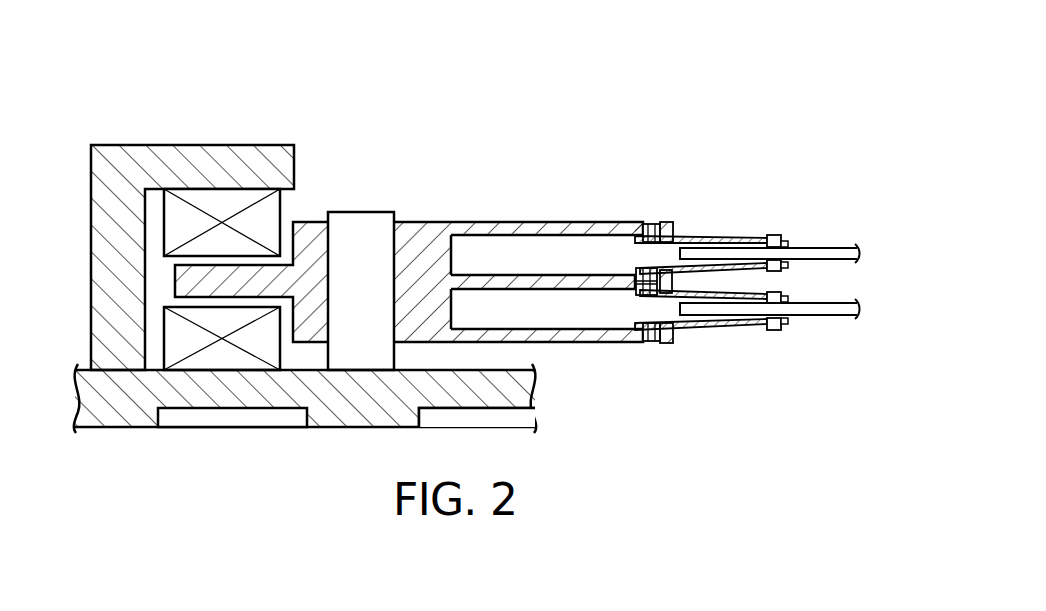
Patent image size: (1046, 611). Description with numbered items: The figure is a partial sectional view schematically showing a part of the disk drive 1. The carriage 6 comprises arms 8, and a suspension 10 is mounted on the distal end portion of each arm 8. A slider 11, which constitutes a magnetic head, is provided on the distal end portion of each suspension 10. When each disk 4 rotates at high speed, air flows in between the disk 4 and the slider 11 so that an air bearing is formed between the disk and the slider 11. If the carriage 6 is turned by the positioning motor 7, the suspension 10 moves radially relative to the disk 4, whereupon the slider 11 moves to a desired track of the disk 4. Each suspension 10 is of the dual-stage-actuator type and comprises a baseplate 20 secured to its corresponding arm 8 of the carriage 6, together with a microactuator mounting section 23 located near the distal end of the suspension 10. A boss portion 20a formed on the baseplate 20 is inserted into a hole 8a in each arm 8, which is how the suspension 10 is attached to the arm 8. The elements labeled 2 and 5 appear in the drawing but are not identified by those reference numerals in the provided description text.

The disk drive 1 is at (467, 252).
The base plate 2 is at (130, 428).
The disk 4 is at (838, 248).
The movable bar 5 is at (363, 213).
The carriage 6 is at (426, 283).
The positioning motor 7 is at (221, 358).
The arm 8 is at (591, 222).
The hole 8a is at (652, 222).
The suspension 10 is at (753, 247).
The slider 11 is at (788, 247).
The baseplate 20 is at (675, 224).
The boss portion 20a is at (645, 224).
The microactuator mounting section 23 is at (772, 236).